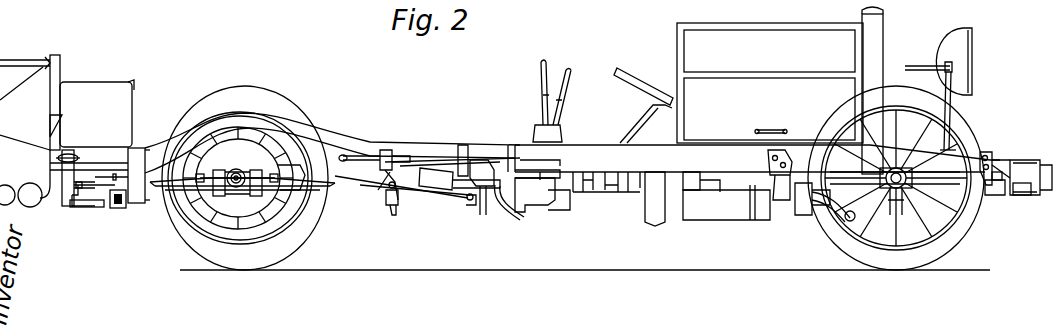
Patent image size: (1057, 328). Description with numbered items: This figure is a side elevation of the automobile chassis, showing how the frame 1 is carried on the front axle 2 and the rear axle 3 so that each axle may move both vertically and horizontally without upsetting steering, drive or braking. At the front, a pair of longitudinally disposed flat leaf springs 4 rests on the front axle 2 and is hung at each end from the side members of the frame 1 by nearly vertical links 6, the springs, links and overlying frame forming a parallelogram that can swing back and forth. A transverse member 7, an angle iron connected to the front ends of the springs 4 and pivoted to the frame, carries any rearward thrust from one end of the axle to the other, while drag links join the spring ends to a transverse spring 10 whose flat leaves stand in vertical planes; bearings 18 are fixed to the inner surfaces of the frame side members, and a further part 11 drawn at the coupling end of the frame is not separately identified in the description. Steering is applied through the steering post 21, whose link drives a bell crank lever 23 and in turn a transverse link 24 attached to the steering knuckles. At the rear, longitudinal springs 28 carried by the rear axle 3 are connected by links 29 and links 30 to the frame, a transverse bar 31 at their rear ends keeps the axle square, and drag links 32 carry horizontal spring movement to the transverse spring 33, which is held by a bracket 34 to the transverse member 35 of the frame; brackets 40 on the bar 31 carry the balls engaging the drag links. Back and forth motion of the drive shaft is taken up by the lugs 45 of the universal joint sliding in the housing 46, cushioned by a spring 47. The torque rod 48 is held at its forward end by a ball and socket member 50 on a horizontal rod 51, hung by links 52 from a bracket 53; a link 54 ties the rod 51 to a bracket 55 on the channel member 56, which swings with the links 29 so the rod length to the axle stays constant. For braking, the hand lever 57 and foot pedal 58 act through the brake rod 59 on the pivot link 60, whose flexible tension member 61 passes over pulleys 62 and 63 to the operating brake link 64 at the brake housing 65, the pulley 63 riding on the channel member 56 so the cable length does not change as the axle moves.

The frame 1 is at (318, 138).
The front axle 2 is at (893, 200).
The rear axle 3 is at (240, 176).
The longitudinally disposed springs 4 is at (955, 210).
The links 6 is at (768, 170).
The transverse member 7 is at (995, 196).
The transverse spring 10 is at (1022, 196).
The hitch socket 11 is at (1040, 165).
The bearings 18 is at (988, 155).
The steering post 21 is at (652, 85).
The bell crank lever 23 is at (808, 208).
The transverse link 24 is at (845, 220).
The longitudinal springs 28 is at (275, 190).
The links 29 is at (415, 190).
The links 30 is at (46, 196).
The transverse bar 31 is at (62, 172).
The drag links 32 is at (96, 207).
The transverse spring 33 is at (122, 207).
The bracket 34 is at (138, 165).
The transverse member 35 is at (120, 150).
The brackets 40 is at (80, 196).
The lugs 45 is at (520, 218).
The housing 46 is at (484, 212).
The spring 47 is at (512, 170).
The torque rod 48 is at (440, 190).
The ball and socket member 50 is at (482, 160).
The horizontal rod 51 is at (468, 200).
The links 52 is at (472, 206).
The bracket 53 is at (460, 145).
The link 54 is at (430, 193).
The bracket 55 is at (388, 200).
The channel member 56 is at (393, 215).
The hand lever 57 is at (548, 75).
The foot pedal 58 is at (640, 102).
The brake rod 59 is at (433, 162).
The pivot link 60 is at (395, 152).
The flexible tension member 61 is at (385, 178).
The pulley 62 is at (382, 152).
The pulley 63 is at (388, 188).
The operating brake link 64 is at (285, 165).
The housing 65 is at (245, 178).